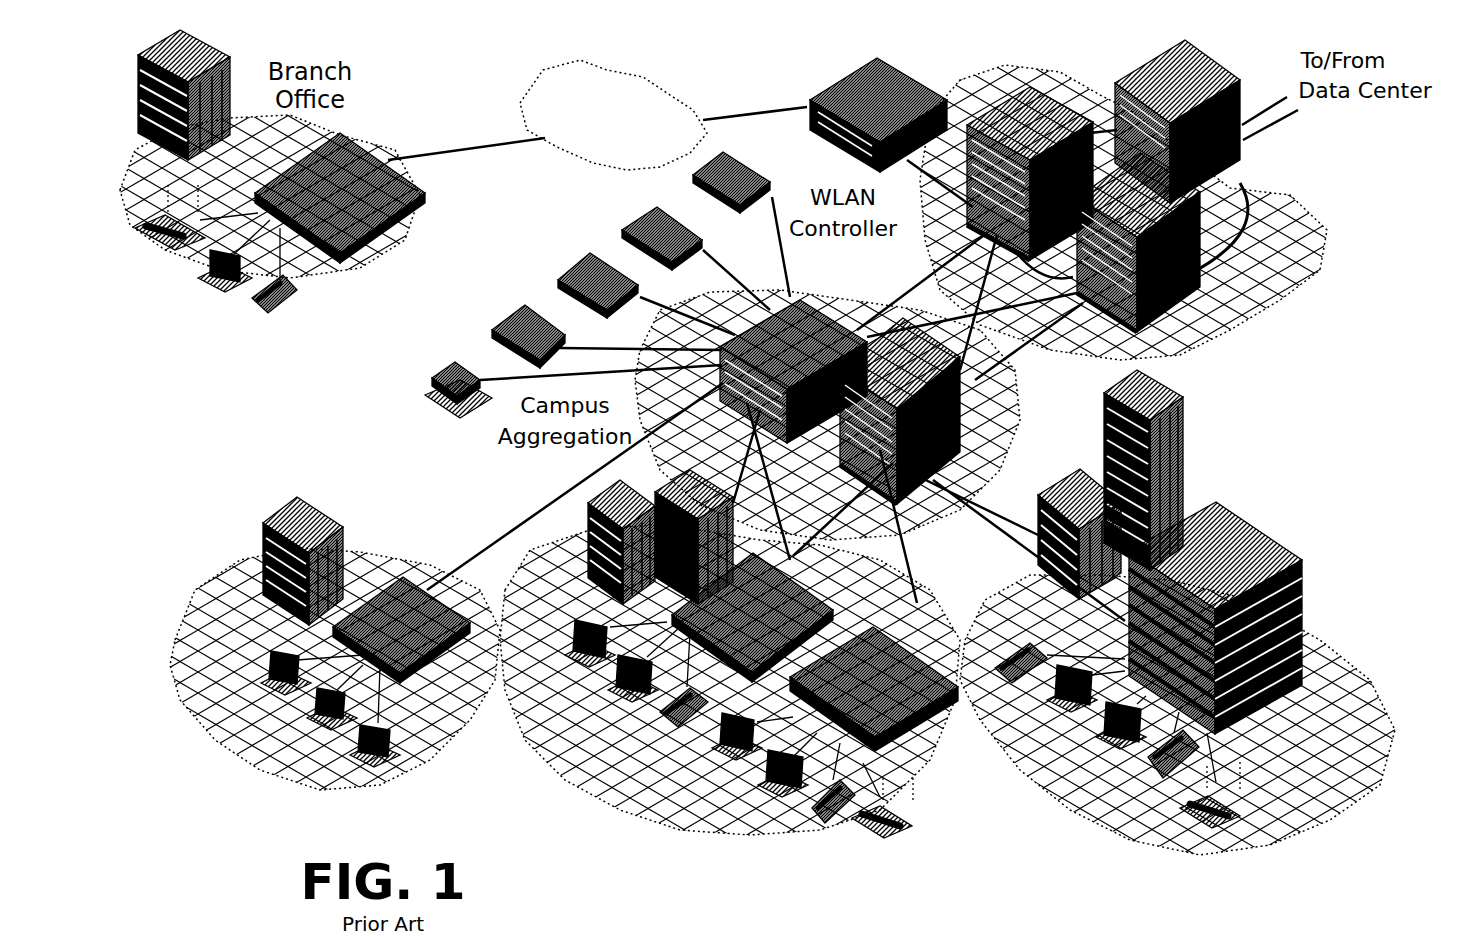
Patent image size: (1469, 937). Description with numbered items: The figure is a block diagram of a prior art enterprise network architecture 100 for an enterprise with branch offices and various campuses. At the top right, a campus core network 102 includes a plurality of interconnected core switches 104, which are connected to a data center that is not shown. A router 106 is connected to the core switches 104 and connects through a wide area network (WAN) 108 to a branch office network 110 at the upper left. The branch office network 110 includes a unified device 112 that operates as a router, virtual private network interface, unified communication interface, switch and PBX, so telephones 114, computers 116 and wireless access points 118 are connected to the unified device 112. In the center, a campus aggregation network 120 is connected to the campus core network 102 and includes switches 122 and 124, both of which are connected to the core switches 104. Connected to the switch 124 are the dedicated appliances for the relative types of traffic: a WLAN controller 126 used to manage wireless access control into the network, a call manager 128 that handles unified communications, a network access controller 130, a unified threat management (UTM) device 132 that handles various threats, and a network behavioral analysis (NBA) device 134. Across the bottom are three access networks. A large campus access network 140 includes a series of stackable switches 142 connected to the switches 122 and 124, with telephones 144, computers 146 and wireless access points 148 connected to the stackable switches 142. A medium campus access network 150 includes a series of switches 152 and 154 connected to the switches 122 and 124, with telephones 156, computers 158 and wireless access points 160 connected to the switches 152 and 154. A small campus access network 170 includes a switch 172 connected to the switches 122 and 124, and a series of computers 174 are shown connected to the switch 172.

The network architecture 100 is at (1405, 470).
The campus core network 102 is at (1313, 285).
The core switches 104 is at (1025, 80).
The router 106 is at (857, 72).
The wide area network (WAN) 108 is at (588, 63).
The branch office network 110 is at (377, 250).
The unified device 112 is at (353, 138).
The telephones 114 is at (262, 333).
The computers 116 is at (197, 292).
The wireless access points 118 is at (177, 247).
The campus aggregation network 120 is at (1008, 478).
The switch 122 is at (948, 446).
The switch 124 is at (810, 318).
The WLAN controller 126 is at (755, 175).
The call manager 128 is at (673, 208).
The network access controller 130 is at (567, 287).
The unified threat management (UTM) device 132 is at (492, 343).
The network behavioral analysis (NBA) device 134 is at (432, 398).
The large campus access network 140 is at (1331, 776).
The stackable switches 142 is at (1261, 530).
The telephones 144 is at (1009, 659).
The computers 146 is at (1038, 704).
The wireless access points 148 is at (1228, 815).
The medium campus access network 150 is at (523, 737).
The switch 152 is at (838, 600).
The switch 154 is at (922, 748).
The telephones 156 is at (680, 723).
The computers 158 is at (592, 672).
The wireless access points 160 is at (903, 827).
The small campus access network 170 is at (197, 672).
The switch 172 is at (367, 597).
The computers 174 is at (258, 690).